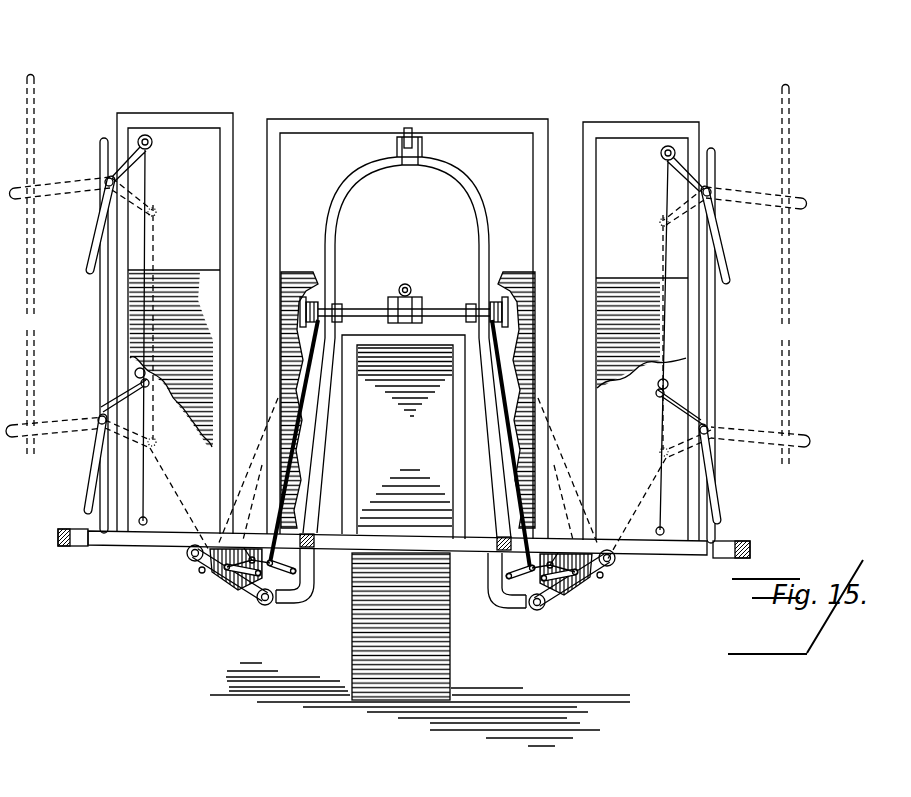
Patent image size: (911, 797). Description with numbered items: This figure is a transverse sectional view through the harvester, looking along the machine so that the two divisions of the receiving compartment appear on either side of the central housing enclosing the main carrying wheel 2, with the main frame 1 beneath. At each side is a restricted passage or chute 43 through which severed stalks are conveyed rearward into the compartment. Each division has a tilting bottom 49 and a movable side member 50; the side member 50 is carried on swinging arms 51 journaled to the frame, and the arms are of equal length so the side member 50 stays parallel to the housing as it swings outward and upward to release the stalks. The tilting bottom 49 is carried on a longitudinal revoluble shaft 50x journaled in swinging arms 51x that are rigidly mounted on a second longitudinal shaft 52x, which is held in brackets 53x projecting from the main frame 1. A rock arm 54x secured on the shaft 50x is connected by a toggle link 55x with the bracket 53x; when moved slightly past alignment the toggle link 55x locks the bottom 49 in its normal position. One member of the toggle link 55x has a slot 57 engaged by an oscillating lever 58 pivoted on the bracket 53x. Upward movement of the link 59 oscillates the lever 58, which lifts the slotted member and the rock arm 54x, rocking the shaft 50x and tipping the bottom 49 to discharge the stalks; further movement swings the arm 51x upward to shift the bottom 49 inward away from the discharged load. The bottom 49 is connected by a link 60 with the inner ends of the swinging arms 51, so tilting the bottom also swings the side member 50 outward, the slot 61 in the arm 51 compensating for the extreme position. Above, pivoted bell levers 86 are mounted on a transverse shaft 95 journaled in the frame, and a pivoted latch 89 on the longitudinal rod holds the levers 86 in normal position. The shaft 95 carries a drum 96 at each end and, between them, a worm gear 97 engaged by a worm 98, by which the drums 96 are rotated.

The main frame 1 is at (468, 110).
The main carrying wheel 2 is at (403, 517).
The restricted passage or chute 43 is at (408, 327).
The tilting bottom 49 is at (597, 536).
The movable side member 50 is at (715, 386).
The swinging arm 51 is at (717, 461).
The slot 57 is at (557, 597).
The oscillating lever 58 is at (498, 572).
The link 59 is at (507, 472).
The link 60 is at (658, 453).
The slot 61 is at (659, 408).
The bell lever 86 is at (328, 252).
The pivoted latch 89 is at (410, 133).
The transverse shaft 95 is at (360, 312).
The drum 96 is at (491, 312).
The worm gear 97 is at (423, 310).
The worm 98 is at (409, 286).
The longitudinal revoluble shaft 50x is at (618, 563).
The swinging arm 51x is at (237, 588).
The second longitudinal shaft 52x is at (529, 607).
The bracket 53x is at (505, 592).
The rock arm 54x is at (605, 578).
The toggle link 55x is at (583, 582).